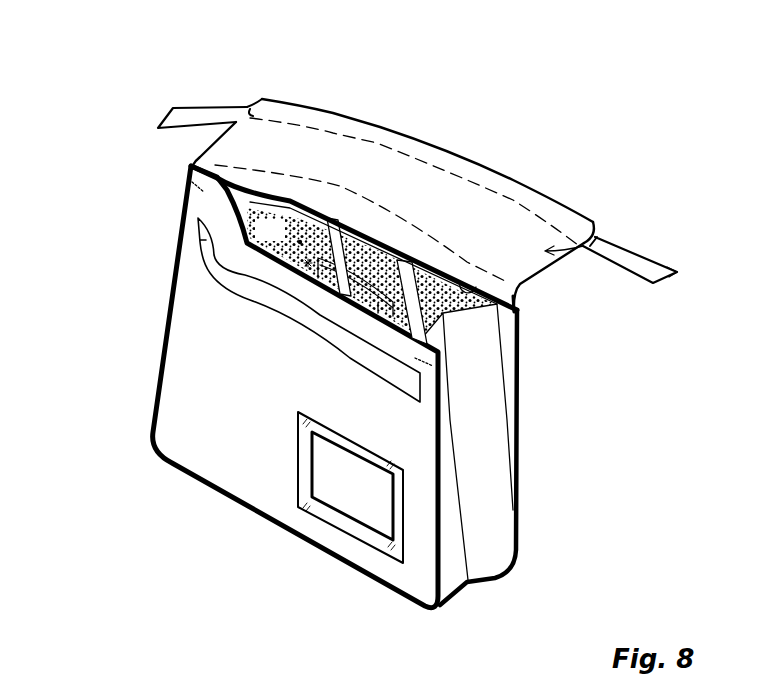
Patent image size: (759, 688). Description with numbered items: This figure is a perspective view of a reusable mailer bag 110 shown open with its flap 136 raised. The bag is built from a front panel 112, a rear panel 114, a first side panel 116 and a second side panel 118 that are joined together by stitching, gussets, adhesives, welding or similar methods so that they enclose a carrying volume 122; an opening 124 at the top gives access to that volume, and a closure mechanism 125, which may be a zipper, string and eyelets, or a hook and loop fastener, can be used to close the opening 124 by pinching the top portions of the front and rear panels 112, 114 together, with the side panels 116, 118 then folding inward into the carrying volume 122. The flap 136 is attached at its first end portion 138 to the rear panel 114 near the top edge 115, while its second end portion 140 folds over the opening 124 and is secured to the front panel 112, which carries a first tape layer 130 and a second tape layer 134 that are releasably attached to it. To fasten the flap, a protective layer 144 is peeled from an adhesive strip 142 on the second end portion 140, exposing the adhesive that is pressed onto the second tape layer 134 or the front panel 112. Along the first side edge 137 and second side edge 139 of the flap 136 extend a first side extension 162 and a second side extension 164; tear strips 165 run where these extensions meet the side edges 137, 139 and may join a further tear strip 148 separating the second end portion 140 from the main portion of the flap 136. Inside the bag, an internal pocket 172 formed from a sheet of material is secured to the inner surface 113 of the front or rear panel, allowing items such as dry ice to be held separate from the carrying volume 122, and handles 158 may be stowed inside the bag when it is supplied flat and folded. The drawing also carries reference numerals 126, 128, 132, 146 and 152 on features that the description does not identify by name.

The mailer bag 110 is at (37, 86).
The front panel 112 is at (182, 334).
The inner surface 113 is at (299, 245).
The rear panel 114 is at (443, 242).
The top edge 115 is at (433, 245).
The first side panel 116 is at (503, 513).
The second side panel 118 is at (233, 203).
The carrying volume 122 is at (283, 240).
The opening 124 is at (308, 266).
The closure mechanism 125 is at (495, 291).
The strap 126 is at (378, 215).
The strap 128 is at (410, 238).
The first tape layer 130 is at (380, 543).
The address indicia 132 is at (330, 503).
The second tape layer 134 is at (200, 242).
The flap 136 is at (648, 286).
The first side edge 137 is at (552, 267).
The first end portion 138 is at (290, 193).
The second side edge 139 is at (205, 140).
The second end portion 140 is at (372, 171).
The adhesive strip 142 is at (597, 230).
The protective layer 144 is at (535, 205).
The stitch line 146 is at (235, 166).
The tear strip 148 is at (513, 202).
The corner 152 is at (516, 318).
The handles 158 is at (327, 205).
The first side extension 162 is at (680, 273).
The second side extension 164 is at (172, 120).
The tear strips 165 is at (262, 100).
The internal pocket 172 is at (378, 312).